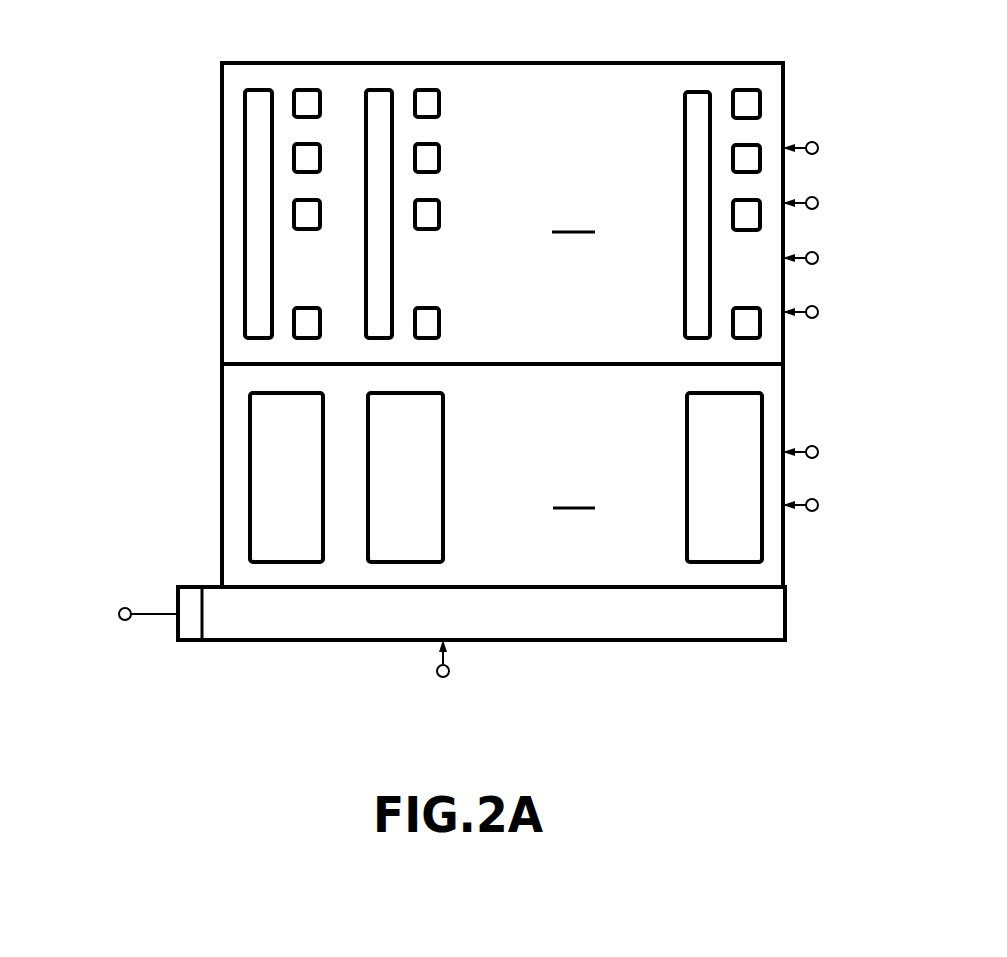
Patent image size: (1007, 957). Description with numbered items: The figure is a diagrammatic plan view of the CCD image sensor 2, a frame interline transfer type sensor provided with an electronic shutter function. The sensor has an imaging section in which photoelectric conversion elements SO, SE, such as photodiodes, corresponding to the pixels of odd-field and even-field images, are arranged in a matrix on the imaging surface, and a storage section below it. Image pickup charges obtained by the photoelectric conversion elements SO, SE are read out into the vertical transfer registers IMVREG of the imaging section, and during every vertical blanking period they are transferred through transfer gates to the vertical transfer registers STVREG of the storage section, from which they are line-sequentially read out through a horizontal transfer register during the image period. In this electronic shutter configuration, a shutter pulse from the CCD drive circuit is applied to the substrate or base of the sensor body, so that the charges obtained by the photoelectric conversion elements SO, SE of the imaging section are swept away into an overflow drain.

The CCD image sensor 2 is at (219, 171).
The odd-field sensor elements SO is at (301, 198).
The even-field sensor elements SE is at (320, 158).
The image section vertical registers IMVREG is at (373, 268).
The storage section vertical registers STVREG is at (400, 427).